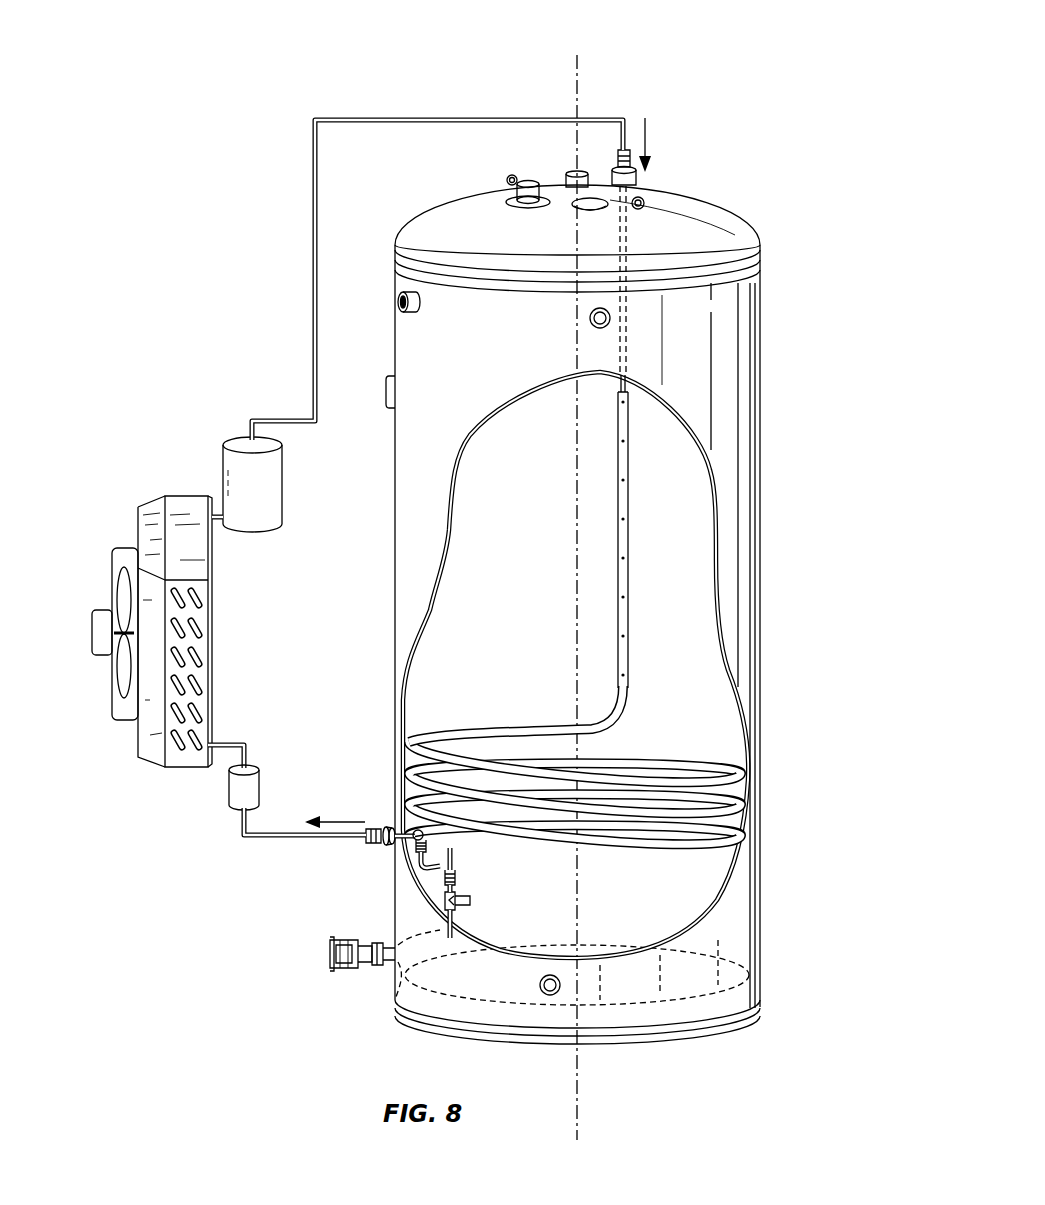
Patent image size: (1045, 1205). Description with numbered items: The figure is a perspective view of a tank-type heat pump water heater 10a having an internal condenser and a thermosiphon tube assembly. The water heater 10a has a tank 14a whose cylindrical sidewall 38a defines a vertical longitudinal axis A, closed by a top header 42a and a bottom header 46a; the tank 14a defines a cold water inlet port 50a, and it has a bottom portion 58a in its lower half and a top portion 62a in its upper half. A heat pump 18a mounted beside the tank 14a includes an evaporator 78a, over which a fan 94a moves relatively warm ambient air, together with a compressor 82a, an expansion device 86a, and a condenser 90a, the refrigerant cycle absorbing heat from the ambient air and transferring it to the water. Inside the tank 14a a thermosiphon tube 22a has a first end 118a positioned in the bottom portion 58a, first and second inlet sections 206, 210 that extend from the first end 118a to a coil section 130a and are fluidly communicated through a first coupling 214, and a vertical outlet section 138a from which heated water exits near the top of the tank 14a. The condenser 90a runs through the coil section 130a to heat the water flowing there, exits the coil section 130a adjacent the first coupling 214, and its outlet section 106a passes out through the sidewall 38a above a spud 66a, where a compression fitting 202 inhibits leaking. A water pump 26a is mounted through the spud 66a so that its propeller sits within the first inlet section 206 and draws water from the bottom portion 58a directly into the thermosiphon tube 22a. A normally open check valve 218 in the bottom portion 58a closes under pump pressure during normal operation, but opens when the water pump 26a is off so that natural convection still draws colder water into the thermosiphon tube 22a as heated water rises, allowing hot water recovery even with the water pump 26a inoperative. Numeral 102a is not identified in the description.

The vertical longitudinal axis A is at (580, 92).
The water heater 10a is at (744, 100).
The tank 14a is at (830, 400).
The heat pump 18a is at (342, 502).
The thermosiphon tube 22a is at (603, 720).
The water pump 26a is at (345, 938).
The sidewall 38a is at (403, 540).
The top header 42a is at (715, 215).
The bottom header 46a is at (600, 945).
The cold water inlet port 50a is at (535, 185).
The bottom portion 58a is at (782, 780).
The top portion 62a is at (782, 314).
The spud 66a is at (378, 966).
The evaporator 78a is at (138, 512).
The compressor 82a is at (282, 473).
The expansion device 86a is at (258, 780).
The condenser 90a is at (310, 320).
The fan 94a is at (118, 582).
The inlet port 102a is at (618, 390).
The outlet section 106a is at (270, 843).
The first end 118a is at (393, 1012).
The coil section 130a is at (478, 725).
The vertical outlet section 138a is at (630, 505).
The compression fitting 202 is at (380, 828).
The first inlet section 206 is at (455, 930).
The second inlet section 210 is at (452, 855).
The first coupling 214 is at (405, 845).
The check valve 218 is at (470, 897).